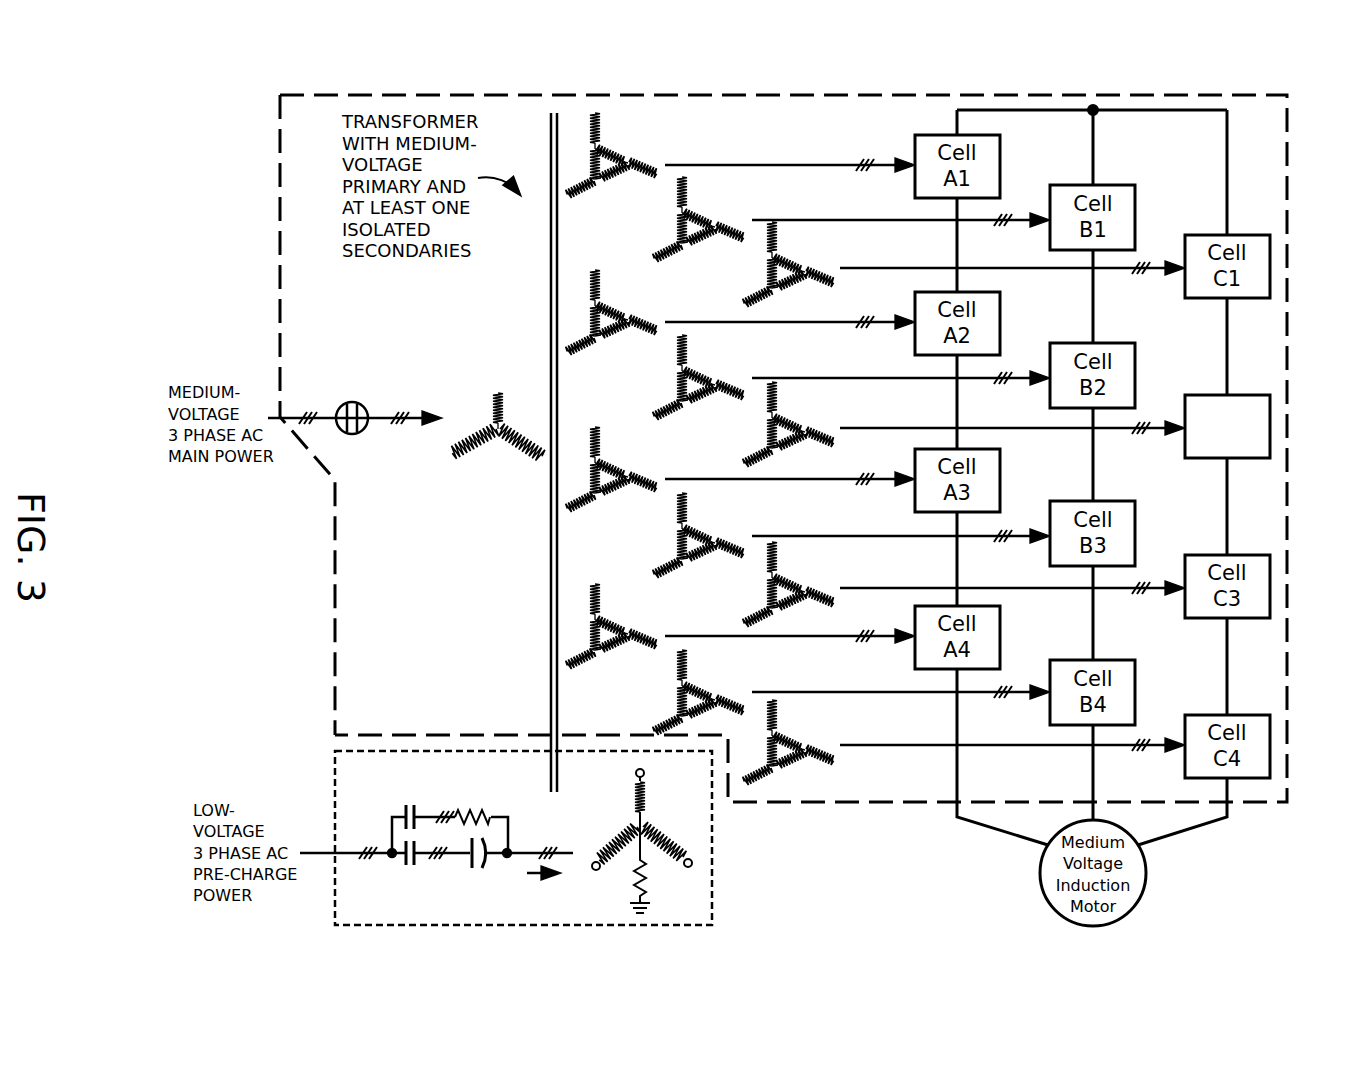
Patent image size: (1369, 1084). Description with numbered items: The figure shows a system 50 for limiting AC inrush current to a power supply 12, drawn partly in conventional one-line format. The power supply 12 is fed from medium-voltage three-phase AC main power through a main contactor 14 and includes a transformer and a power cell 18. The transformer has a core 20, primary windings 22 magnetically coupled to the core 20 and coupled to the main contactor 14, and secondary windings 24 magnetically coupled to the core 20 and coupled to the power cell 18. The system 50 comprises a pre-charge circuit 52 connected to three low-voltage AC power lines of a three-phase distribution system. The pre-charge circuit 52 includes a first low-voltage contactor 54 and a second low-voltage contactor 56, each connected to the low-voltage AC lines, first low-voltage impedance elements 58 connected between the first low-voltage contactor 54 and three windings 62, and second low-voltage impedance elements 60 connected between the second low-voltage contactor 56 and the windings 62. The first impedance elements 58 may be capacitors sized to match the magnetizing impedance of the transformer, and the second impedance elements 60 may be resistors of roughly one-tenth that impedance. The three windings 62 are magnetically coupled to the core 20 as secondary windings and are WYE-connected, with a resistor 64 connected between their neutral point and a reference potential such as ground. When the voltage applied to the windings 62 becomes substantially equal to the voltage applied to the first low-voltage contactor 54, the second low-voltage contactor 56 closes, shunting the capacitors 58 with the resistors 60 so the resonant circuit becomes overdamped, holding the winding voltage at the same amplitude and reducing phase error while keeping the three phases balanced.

The power supply 12 is at (1288, 197).
The main contactor 14 is at (353, 436).
The power cell 18 is at (1272, 396).
The core 20 is at (549, 560).
The primary windings 22 is at (498, 388).
The secondary windings 24 is at (758, 434).
The system 50 is at (188, 550).
The pre-charge circuit 52 is at (545, 838).
The first low-voltage contactor 54 is at (417, 868).
The second low-voltage contactor 56 is at (408, 805).
The first low-voltage impedance elements 58 is at (478, 870).
The second low-voltage impedance elements 60 is at (474, 803).
The windings 62 is at (636, 796).
The resistor 64 is at (633, 878).